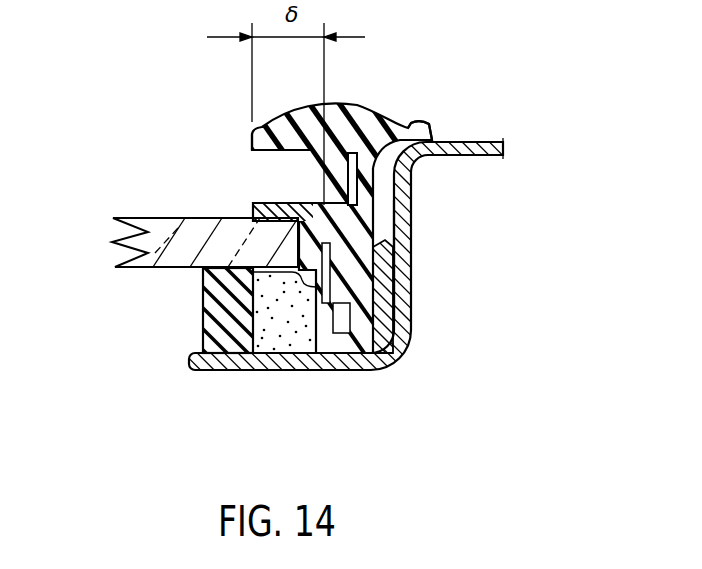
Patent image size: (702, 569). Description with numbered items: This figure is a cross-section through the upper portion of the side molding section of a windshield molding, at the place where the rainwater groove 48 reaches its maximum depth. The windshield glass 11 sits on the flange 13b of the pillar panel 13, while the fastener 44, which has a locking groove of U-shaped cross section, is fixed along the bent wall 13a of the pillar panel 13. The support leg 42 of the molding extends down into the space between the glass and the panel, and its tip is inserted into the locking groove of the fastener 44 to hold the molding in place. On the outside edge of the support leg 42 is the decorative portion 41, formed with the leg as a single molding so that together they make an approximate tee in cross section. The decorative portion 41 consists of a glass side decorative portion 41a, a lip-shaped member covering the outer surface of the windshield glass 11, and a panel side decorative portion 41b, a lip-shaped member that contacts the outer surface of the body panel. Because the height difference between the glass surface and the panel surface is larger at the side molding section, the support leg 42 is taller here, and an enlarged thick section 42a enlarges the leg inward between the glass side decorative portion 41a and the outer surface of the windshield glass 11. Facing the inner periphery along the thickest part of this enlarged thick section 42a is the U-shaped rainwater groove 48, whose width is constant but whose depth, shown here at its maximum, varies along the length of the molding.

The windshield glass 11 is at (143, 226).
The pillar panel 13 is at (478, 141).
The bent wall 13a is at (408, 256).
The flange 13b is at (272, 369).
The decorative portion 41 is at (357, 106).
The glass side decorative portion 41a is at (260, 136).
The panel side decorative portion 41b is at (428, 122).
The support leg 42 is at (373, 222).
The enlarged thick section 42a is at (252, 212).
The fastener 44 is at (351, 349).
The rainwater groove 48 is at (272, 158).